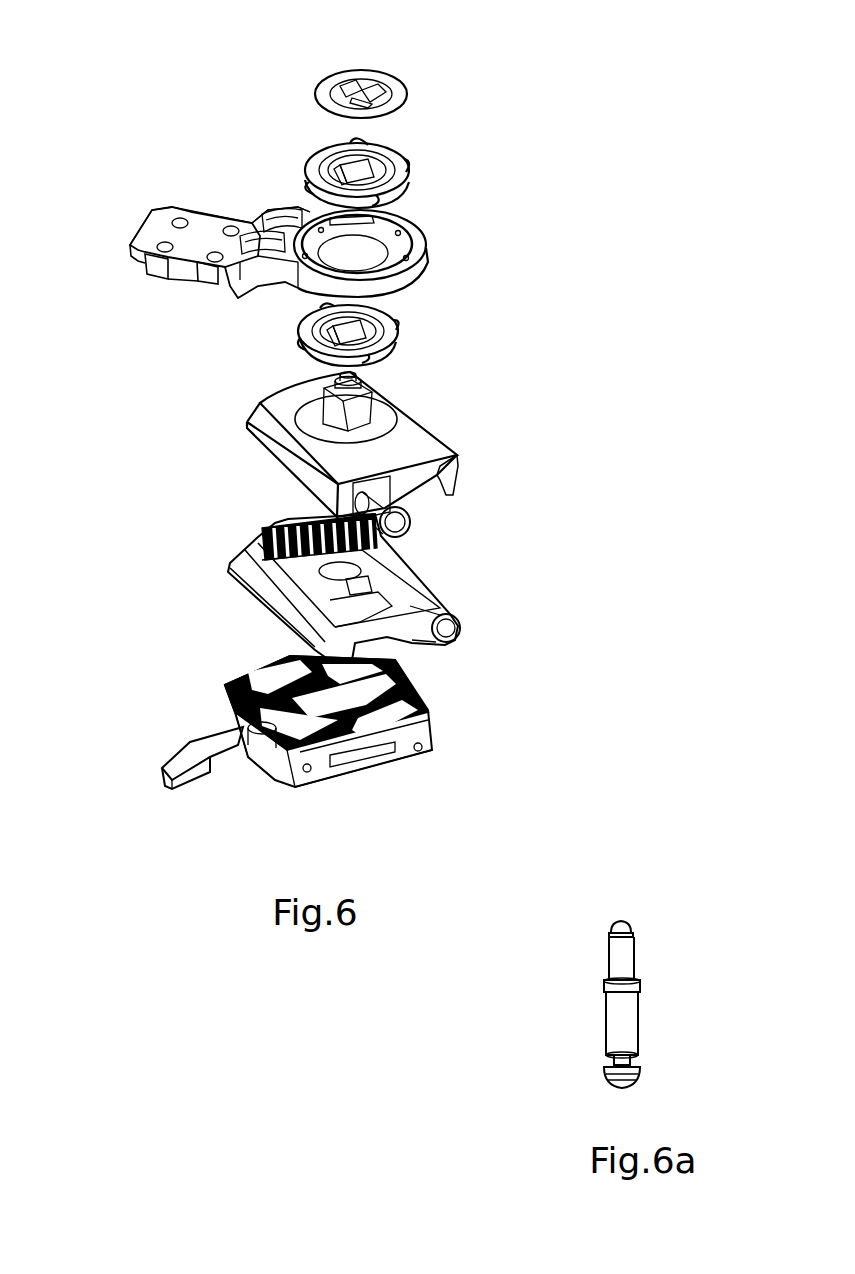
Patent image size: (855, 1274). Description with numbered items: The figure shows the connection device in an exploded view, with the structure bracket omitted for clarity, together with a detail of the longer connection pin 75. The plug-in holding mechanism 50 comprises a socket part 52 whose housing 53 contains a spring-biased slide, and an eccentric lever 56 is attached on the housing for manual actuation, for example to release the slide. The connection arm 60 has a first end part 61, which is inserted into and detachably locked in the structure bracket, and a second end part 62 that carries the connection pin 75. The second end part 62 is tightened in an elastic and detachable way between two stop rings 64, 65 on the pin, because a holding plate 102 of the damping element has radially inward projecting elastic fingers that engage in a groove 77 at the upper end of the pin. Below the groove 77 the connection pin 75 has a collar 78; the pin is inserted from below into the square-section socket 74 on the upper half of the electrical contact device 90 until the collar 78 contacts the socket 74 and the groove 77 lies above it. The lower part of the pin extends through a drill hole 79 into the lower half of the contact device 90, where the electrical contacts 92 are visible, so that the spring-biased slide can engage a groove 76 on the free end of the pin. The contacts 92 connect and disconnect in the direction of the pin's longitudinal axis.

In FIG. 6, the plug-in holding mechanism 50 is at (443, 229).
In FIG. 6, the socket part 52 is at (460, 727).
In FIG. 6, the housing 53 is at (420, 752).
In FIG. 6, the eccentric lever 56 is at (178, 762).
In FIG. 6, the connection arm 60 is at (248, 178).
In FIG. 6, the first end part 61 is at (186, 245).
In FIG. 6, the second end part 62 is at (412, 276).
In FIG. 6, the stop ring 64 is at (410, 172).
In FIG. 6, the stop ring 65 is at (287, 337).
In FIG. 6, the socket 74 is at (347, 415).
In FIG. 6, the connection pin 75 is at (362, 383).
In FIG. 6A, the connection pin 75 is at (618, 1017).
In FIG. 6A, the groove 76 is at (640, 1069).
In FIG. 6, the groove 77 is at (336, 391).
In FIG. 6A, the groove 77 is at (637, 931).
In FIG. 6A, the collar 78 is at (640, 984).
In FIG. 6, the drill hole 79 is at (330, 578).
In FIG. 6, the electrical contact device 90 is at (491, 455).
In FIG. 6, the electrical contacts 92 is at (400, 536).
In FIG. 6, the holding plate 102 is at (400, 92).